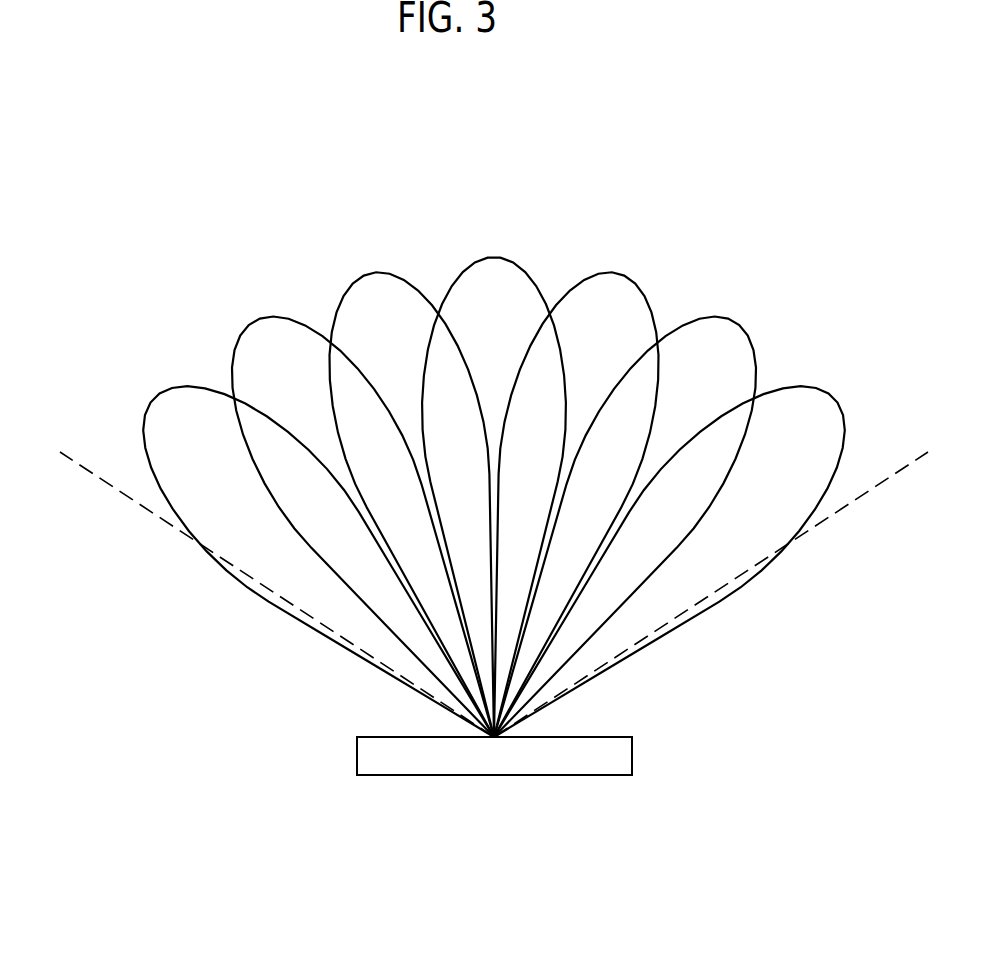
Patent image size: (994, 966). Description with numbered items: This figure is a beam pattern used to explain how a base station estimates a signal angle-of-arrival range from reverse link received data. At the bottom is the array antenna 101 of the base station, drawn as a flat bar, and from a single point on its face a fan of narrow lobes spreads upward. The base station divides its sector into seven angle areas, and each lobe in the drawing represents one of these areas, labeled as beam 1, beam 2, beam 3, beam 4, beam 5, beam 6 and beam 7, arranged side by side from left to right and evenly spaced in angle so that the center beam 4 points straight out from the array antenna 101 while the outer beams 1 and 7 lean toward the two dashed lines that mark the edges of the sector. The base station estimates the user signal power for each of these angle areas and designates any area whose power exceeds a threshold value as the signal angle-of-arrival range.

The array antenna 101 is at (572, 813).
The beam # 1 is at (324, 567).
The beam # 2 is at (374, 526).
The beam # 3 is at (431, 494).
The beam # 4 is at (494, 476).
The beam # 5 is at (556, 494).
The beam # 6 is at (614, 527).
The beam # 7 is at (663, 567).